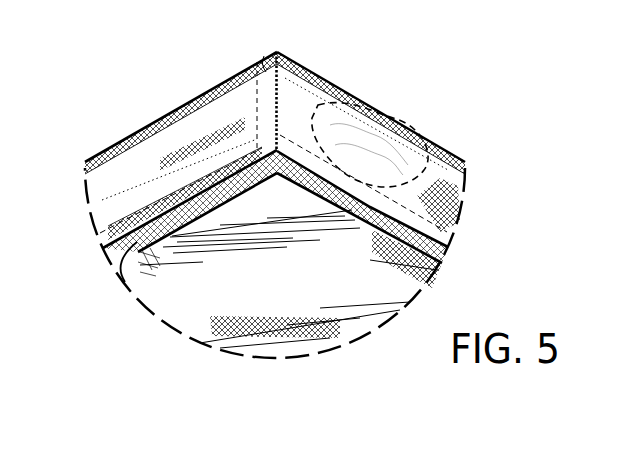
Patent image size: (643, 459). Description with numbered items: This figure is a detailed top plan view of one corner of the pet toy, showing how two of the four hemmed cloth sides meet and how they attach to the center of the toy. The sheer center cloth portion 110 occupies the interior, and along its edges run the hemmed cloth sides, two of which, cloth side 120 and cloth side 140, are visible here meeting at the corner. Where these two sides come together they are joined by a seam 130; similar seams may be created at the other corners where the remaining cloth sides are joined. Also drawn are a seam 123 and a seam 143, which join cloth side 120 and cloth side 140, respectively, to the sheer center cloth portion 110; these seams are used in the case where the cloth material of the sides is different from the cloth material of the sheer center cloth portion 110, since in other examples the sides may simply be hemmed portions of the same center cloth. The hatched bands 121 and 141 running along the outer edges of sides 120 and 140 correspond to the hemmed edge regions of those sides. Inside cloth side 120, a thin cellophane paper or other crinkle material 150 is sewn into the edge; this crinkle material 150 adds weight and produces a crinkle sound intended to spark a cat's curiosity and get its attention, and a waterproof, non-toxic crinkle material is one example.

The sheer center cloth portion 110 is at (192, 303).
The cloth side 120 is at (442, 168).
The wall top layer 121 is at (320, 72).
The seam 123 is at (438, 243).
The seam 130 is at (265, 78).
The cloth side 140 is at (183, 140).
The first wall top layer 141 is at (113, 145).
The seam 143 is at (121, 274).
The crinkle material 150 is at (375, 128).